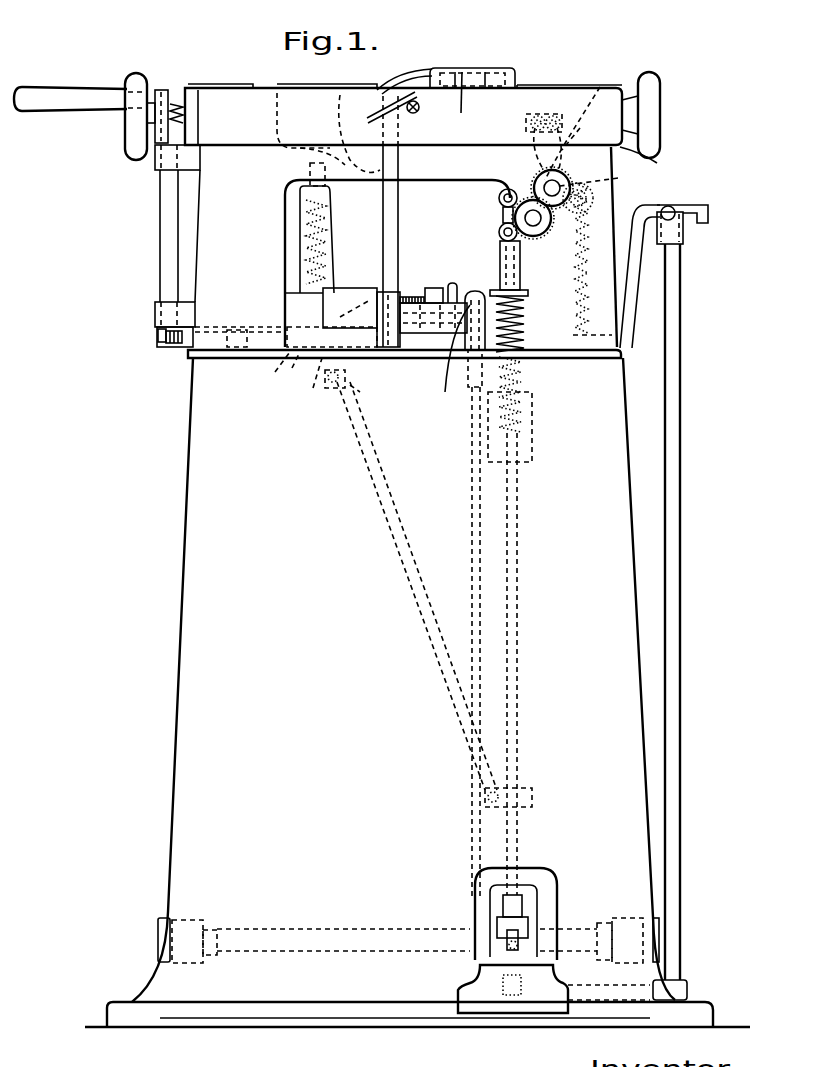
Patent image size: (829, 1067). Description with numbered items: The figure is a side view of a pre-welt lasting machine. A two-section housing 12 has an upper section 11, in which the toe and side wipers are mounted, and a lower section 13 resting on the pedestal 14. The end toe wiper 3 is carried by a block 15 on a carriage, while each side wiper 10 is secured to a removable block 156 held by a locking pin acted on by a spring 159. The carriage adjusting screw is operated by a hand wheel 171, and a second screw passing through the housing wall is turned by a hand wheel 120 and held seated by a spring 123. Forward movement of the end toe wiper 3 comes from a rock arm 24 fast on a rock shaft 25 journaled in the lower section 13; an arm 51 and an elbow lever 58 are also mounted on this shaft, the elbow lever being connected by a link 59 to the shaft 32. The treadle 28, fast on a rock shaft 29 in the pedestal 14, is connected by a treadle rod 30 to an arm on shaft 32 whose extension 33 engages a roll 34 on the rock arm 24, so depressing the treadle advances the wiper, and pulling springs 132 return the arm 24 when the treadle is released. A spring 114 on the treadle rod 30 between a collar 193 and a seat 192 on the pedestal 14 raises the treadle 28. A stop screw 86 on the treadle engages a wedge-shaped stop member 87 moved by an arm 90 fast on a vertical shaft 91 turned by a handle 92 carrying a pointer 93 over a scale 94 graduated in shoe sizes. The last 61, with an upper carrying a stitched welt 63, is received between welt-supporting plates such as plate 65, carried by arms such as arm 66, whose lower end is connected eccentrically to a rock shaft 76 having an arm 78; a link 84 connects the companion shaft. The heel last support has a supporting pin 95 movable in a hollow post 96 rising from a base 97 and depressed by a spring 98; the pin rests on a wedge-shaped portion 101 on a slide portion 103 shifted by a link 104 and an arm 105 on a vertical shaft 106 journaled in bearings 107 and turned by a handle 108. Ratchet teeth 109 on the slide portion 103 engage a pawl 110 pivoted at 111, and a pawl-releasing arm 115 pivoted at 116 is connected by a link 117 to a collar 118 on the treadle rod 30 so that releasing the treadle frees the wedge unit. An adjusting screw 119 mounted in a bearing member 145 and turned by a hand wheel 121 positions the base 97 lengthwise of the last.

The end toe wiper 3 is at (492, 68).
The side wiper 10 is at (467, 105).
The upper section of housing 11 is at (563, 103).
The two-section housing 12 is at (652, 159).
The lower section of housing 13 is at (600, 208).
The pedestal 14 is at (198, 618).
The block 15 is at (510, 78).
The rock arm 24 is at (582, 130).
The rock shaft 25 is at (553, 186).
The treadle 28 is at (483, 992).
The rock shaft 29 is at (417, 933).
The treadle rod 30 is at (520, 725).
The shaft 32 is at (526, 265).
The extension 33 is at (533, 226).
The roll 34 is at (602, 181).
The arm 51 is at (530, 137).
The elbow lever 58 is at (523, 183).
The link 59 is at (503, 213).
The last 61 is at (287, 150).
The welt 63 is at (415, 103).
The welt-supporting plate 65 is at (412, 85).
The arm 66 is at (397, 212).
The rock shaft 76 is at (440, 351).
The arm 78 is at (472, 382).
The link 84 is at (472, 500).
The stop screw 86 is at (507, 953).
The wedge-shaped stop member 87 is at (500, 993).
The arm 90 is at (597, 997).
The vertical shaft 91 is at (678, 622).
The handle 92 is at (676, 233).
The pointer 93 is at (680, 203).
The scale 94 is at (693, 203).
The supporting pin 95 is at (308, 190).
The hollow post 96 is at (302, 208).
The base 97 is at (342, 288).
The spring 98 is at (305, 232).
The wedge-shaped portion 101 is at (340, 317).
The slide portion 103 is at (247, 337).
The link 104 is at (180, 345).
The arm 105 is at (160, 343).
The vertical shaft 106 is at (165, 243).
The bearings 107 is at (157, 163).
The handle 108 is at (75, 90).
The ratchet teeth 109 is at (265, 373).
The spring-pressed pawl 110 is at (290, 376).
The pawl pivot 111 is at (313, 386).
The spring 114 is at (522, 350).
The pawl-releasing arm 115 is at (360, 392).
The pivot 116 is at (348, 378).
The link 117 is at (415, 617).
The collar 118 is at (527, 798).
The adjusting screw 119 is at (408, 297).
The hand wheel 120 is at (143, 82).
The hand wheel 121 is at (455, 298).
The spring 123 is at (180, 108).
The pulling spring 132 is at (570, 307).
The bearing member 145 is at (432, 293).
The block 156 is at (372, 113).
The spring 159 is at (460, 75).
The hand wheel 171 is at (655, 100).
The seat 192 is at (528, 450).
The collar 193 is at (535, 297).